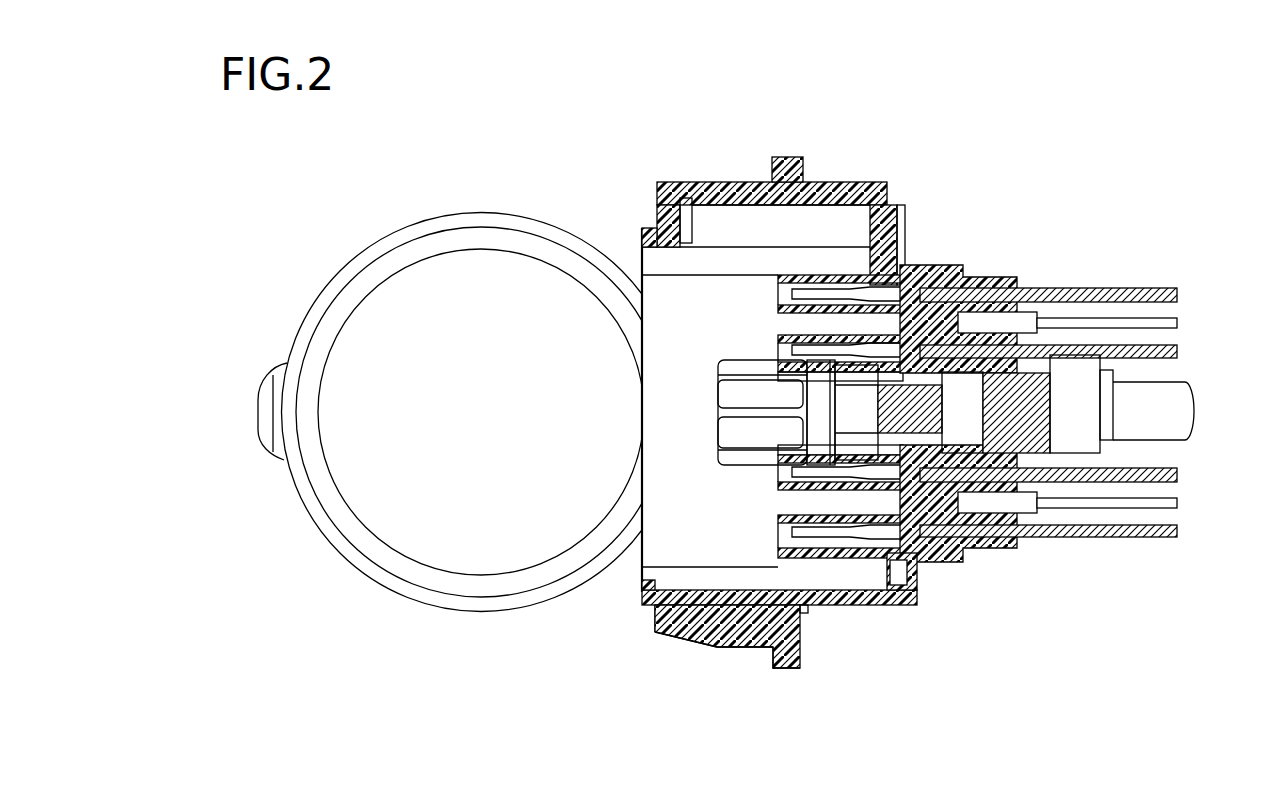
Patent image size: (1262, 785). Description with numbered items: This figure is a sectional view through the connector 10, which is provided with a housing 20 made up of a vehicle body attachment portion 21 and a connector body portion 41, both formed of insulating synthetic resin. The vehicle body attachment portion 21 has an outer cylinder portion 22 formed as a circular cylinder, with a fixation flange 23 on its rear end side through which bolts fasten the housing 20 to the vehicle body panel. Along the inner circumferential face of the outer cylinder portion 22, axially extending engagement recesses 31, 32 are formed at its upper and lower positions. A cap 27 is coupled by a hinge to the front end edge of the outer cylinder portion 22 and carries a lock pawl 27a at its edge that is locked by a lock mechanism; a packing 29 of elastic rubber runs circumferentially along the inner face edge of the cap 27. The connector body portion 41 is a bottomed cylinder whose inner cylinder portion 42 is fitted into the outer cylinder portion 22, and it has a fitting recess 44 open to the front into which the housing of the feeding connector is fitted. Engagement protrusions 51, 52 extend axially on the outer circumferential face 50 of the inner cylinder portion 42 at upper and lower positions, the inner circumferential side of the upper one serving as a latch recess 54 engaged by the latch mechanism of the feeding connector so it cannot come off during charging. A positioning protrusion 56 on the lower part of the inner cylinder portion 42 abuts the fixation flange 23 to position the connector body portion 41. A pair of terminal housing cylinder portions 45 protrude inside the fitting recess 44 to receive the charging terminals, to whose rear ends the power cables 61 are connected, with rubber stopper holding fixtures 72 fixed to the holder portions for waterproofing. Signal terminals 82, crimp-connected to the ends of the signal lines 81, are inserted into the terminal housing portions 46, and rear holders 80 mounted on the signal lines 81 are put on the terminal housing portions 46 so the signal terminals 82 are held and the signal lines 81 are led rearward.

The connector 10 is at (438, 110).
The housing 20 is at (840, 50).
The vehicle body attachment portion 21 is at (738, 178).
The connector body portion 41 is at (847, 181).
The engagement recess 31 is at (710, 190).
The engagement protrusion 51 is at (875, 205).
The latch recess 54 is at (893, 212).
The signal terminal 82 is at (885, 290).
The rear holder 80 is at (945, 254).
The signal line 81 is at (1177, 344).
The power cable 61 is at (1172, 384).
The rubber stopper holding fixture 72 is at (1082, 447).
The terminal housing portion 46 is at (770, 300).
The terminal housing cylinder portion 45 is at (740, 472).
The cap 27 is at (405, 212).
The lock pawl 27a is at (268, 383).
The packing 29 is at (410, 578).
The fitting recess 44 is at (637, 595).
The inner cylinder portion 42 is at (650, 605).
The outer cylinder portion 22 is at (660, 630).
The outer circumferential face 50 is at (667, 643).
The engagement protrusion 52 is at (757, 602).
The fixation flange 23 is at (790, 670).
The positioning protrusion 56 is at (806, 614).
The engagement recess 32 is at (835, 580).